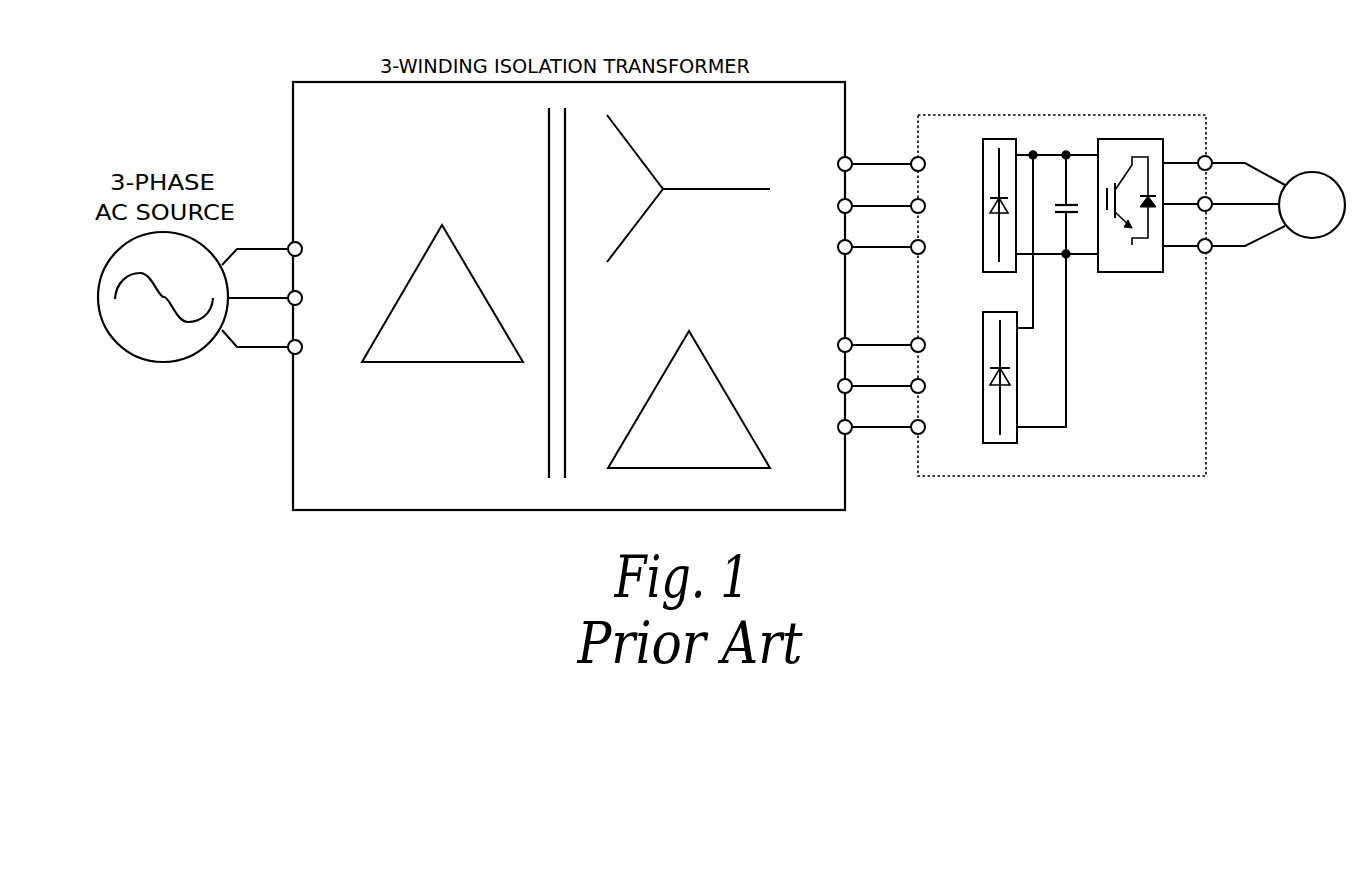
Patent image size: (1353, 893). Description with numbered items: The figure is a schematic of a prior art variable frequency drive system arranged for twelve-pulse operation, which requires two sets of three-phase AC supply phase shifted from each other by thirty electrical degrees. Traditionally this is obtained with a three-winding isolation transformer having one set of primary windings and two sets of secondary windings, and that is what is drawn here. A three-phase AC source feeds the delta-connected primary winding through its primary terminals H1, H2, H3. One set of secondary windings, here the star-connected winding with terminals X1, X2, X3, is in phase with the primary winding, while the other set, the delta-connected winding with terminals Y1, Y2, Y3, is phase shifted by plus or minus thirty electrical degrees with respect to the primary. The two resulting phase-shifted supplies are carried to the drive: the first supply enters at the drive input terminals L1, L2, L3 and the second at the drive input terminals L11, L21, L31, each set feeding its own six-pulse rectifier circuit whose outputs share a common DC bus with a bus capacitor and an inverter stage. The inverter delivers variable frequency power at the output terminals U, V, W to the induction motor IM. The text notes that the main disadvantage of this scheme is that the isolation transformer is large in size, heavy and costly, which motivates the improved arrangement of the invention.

The primary winding terminal H1 is at (336, 235).
The primary winding terminal H2 is at (298, 339).
The primary winding terminal H3 is at (377, 360).
The secondary winding terminal X1 is at (749, 136).
The secondary winding terminal X2 is at (828, 208).
The secondary winding terminal X3 is at (749, 265).
The tertiary winding terminal Y1 is at (791, 333).
The tertiary winding terminal Y2 is at (750, 436).
The tertiary winding terminal Y3 is at (832, 457).
The drive input terminal L1 is at (933, 165).
The drive input terminal L2 is at (933, 207).
The drive input terminal L3 is at (933, 248).
The drive input terminal L11 is at (936, 346).
The drive input terminal L21 is at (936, 386).
The drive input terminal L31 is at (936, 426).
The drive output terminal U is at (1224, 165).
The drive output terminal V is at (1221, 198).
The drive output terminal W is at (1224, 239).
The induction motor IM is at (1312, 205).